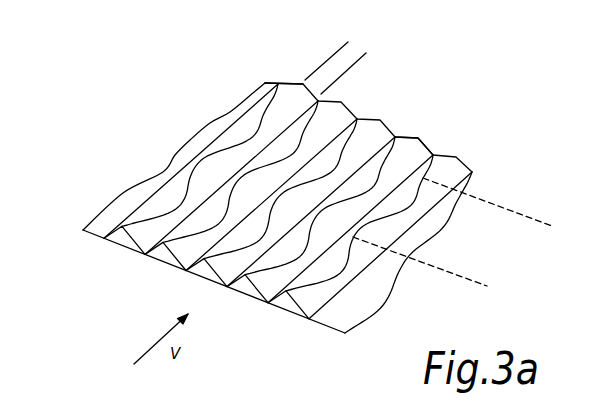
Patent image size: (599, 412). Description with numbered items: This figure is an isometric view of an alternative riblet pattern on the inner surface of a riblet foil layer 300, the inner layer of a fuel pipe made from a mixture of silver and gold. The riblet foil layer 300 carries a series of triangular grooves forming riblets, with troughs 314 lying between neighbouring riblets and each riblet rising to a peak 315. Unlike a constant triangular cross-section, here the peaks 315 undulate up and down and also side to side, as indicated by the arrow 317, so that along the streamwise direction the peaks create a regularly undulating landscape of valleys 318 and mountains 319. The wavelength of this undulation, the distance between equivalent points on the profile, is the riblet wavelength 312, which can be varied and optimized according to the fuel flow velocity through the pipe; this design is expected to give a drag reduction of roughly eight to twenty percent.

The riblet foil layer 300 is at (261, 175).
The riblet wavelength 312 is at (541, 221).
The trough 314 is at (136, 211).
The peak 315 is at (418, 138).
The arrow 317 is at (302, 38).
The valley 318 is at (246, 142).
The mountain 319 is at (277, 84).